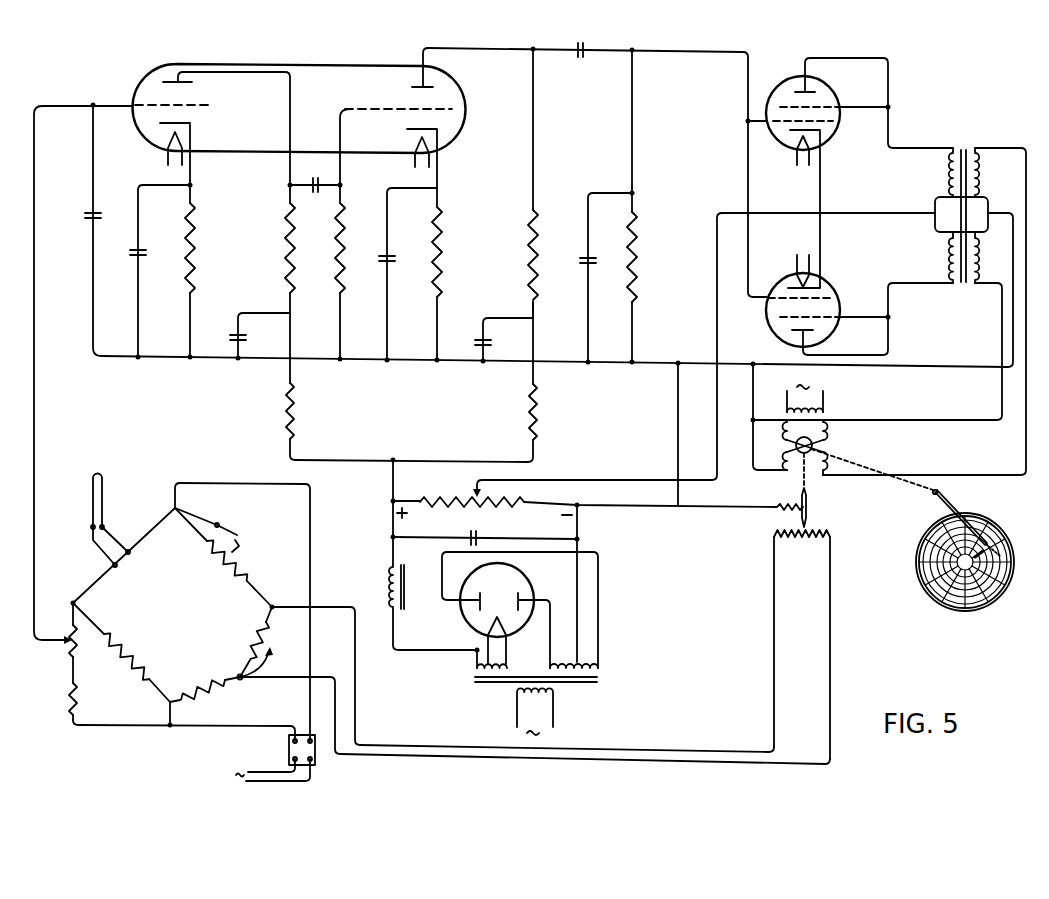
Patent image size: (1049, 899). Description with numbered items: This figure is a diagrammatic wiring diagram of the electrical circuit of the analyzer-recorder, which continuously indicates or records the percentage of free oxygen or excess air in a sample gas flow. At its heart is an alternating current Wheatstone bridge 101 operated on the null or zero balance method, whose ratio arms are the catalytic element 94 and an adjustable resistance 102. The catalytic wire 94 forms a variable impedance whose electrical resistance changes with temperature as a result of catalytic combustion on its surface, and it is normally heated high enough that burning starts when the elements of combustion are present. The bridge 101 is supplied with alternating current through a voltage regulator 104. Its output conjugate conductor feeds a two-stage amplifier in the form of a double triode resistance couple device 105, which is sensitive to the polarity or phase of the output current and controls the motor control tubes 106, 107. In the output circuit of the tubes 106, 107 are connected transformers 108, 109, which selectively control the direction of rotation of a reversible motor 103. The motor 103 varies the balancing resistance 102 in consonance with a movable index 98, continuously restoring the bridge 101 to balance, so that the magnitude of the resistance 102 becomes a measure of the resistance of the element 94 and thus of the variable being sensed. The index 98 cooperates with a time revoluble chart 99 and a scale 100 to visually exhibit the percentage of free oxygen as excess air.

The catalytic element 94 is at (102, 488).
The movable index 98 is at (950, 505).
The time revoluble chart 99 is at (942, 608).
The scale 100 is at (978, 560).
The alternating current Wheatstone bridge 101 is at (190, 621).
The adjustable resistance 102 is at (817, 567).
The reversible motor 103 is at (877, 452).
The voltage regulator 104 is at (288, 750).
The double triode resistance couple device 105 is at (143, 80).
The motor control tube 106 is at (827, 142).
The motor control tube 107 is at (825, 283).
The transformer 108 is at (962, 148).
The transformer 109 is at (962, 285).